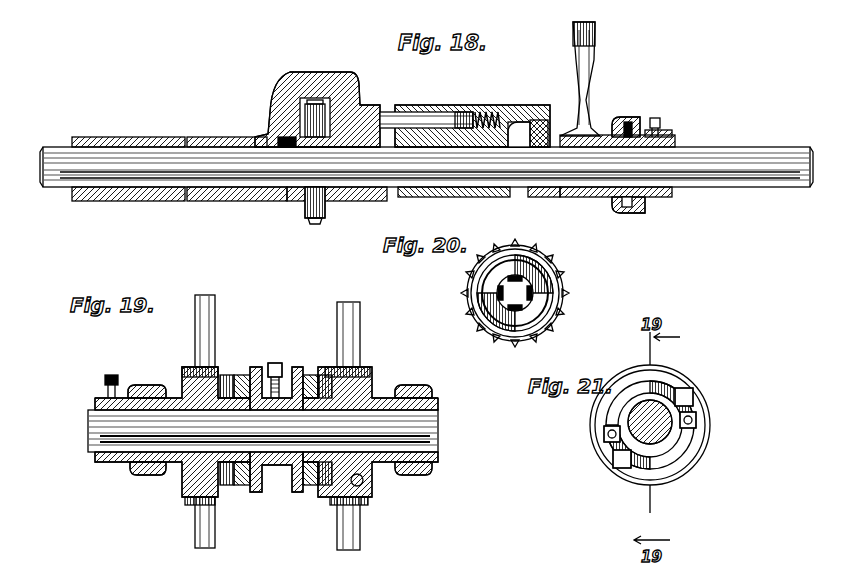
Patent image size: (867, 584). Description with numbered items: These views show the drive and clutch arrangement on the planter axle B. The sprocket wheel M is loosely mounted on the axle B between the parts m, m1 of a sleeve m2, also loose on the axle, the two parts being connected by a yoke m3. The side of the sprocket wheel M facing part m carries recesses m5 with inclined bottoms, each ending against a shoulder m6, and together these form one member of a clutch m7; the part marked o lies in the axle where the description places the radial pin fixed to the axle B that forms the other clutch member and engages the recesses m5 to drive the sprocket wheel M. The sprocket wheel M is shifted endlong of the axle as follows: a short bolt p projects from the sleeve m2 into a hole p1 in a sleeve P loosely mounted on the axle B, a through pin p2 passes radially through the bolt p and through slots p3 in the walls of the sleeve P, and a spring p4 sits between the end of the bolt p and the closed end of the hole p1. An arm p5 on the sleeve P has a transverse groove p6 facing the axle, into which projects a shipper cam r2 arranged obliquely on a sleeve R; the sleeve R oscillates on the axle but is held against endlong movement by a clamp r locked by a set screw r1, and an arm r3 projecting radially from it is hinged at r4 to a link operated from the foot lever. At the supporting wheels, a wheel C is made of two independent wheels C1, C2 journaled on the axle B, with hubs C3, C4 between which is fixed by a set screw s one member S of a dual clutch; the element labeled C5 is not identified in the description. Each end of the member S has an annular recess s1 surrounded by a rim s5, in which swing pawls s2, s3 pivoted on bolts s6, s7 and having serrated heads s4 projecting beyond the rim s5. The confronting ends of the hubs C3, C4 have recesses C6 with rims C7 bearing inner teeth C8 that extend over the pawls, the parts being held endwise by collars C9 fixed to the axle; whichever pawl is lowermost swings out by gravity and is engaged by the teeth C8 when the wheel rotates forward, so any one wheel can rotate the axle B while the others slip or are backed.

In FIG. 18, the axle B is at (110, 160).
In FIG. 19, the axle B is at (90, 426).
In FIG. 21, the axle B is at (692, 455).
In FIG. 18, the sprocket wheel M is at (313, 145).
In FIG. 20, the sprocket wheel M is at (519, 294).
In FIG. 18, the sleeve part m is at (246, 137).
In FIG. 18, the sleeve part m1 is at (360, 105).
In FIG. 18, the sleeve m2 is at (129, 184).
In FIG. 18, the yoke m3 is at (292, 74).
In FIG. 18, the recesses m5 is at (290, 195).
In FIG. 20, the recesses m5 is at (508, 340).
In FIG. 20, the shoulder m6 is at (536, 288).
In FIG. 18, the clutch m7 is at (308, 206).
In FIG. 20, the clutch m7 is at (467, 300).
In FIG. 18, the key o is at (310, 148).
In FIG. 18, the sleeve P is at (476, 148).
In FIG. 18, the short bolt p is at (405, 112).
In FIG. 18, the hole p1 is at (428, 112).
In FIG. 18, the through pin p2 is at (464, 112).
In FIG. 18, the slots p3 is at (490, 108).
In FIG. 18, the spring p4 is at (520, 106).
In FIG. 18, the arm p5 is at (545, 108).
In FIG. 18, the transverse groove p6 is at (556, 110).
In FIG. 18, the sleeve R is at (615, 122).
In FIG. 18, the clamp r is at (635, 118).
In FIG. 18, the set screw r1 is at (662, 124).
In FIG. 18, the shipper cam r2 is at (547, 123).
In FIG. 18, the arm r3 is at (595, 72).
In FIG. 18, the hinge r4 is at (569, 40).
In FIG. 19, the wheel C is at (275, 422).
In FIG. 19, the wheel C1 is at (193, 421).
In FIG. 19, the wheel C2 is at (356, 426).
In FIG. 19, the hub C3 is at (195, 478).
In FIG. 19, the hub C4 is at (365, 475).
In FIG. 19, the screw C5 is at (140, 387).
In FIG. 19, the recess C6 is at (222, 372).
In FIG. 19, the rim C7 is at (240, 375).
In FIG. 19, the serrations or teeth C8 is at (245, 488).
In FIG. 19, the collars C9 is at (432, 392).
In FIG. 19, the clutch member S is at (272, 430).
In FIG. 21, the clutch member S is at (653, 425).
In FIG. 19, the set screw s is at (275, 363).
In FIG. 19, the annular recess s1 is at (322, 360).
In FIG. 21, the annular recess s1 is at (688, 386).
In FIG. 19, the swinging pawl s2 is at (236, 398).
In FIG. 21, the swinging pawl s2 is at (640, 383).
In FIG. 19, the swinging pawl s3 is at (228, 466).
In FIG. 21, the swinging pawl s3 is at (668, 468).
In FIG. 21, the serrated heads s4 is at (695, 396).
In FIG. 19, the rim s5 is at (240, 375).
In FIG. 21, the rim s5 is at (710, 426).
In FIG. 19, the bolt s6 is at (235, 432).
In FIG. 21, the bolt s6 is at (604, 436).
In FIG. 21, the bolt s7 is at (696, 420).